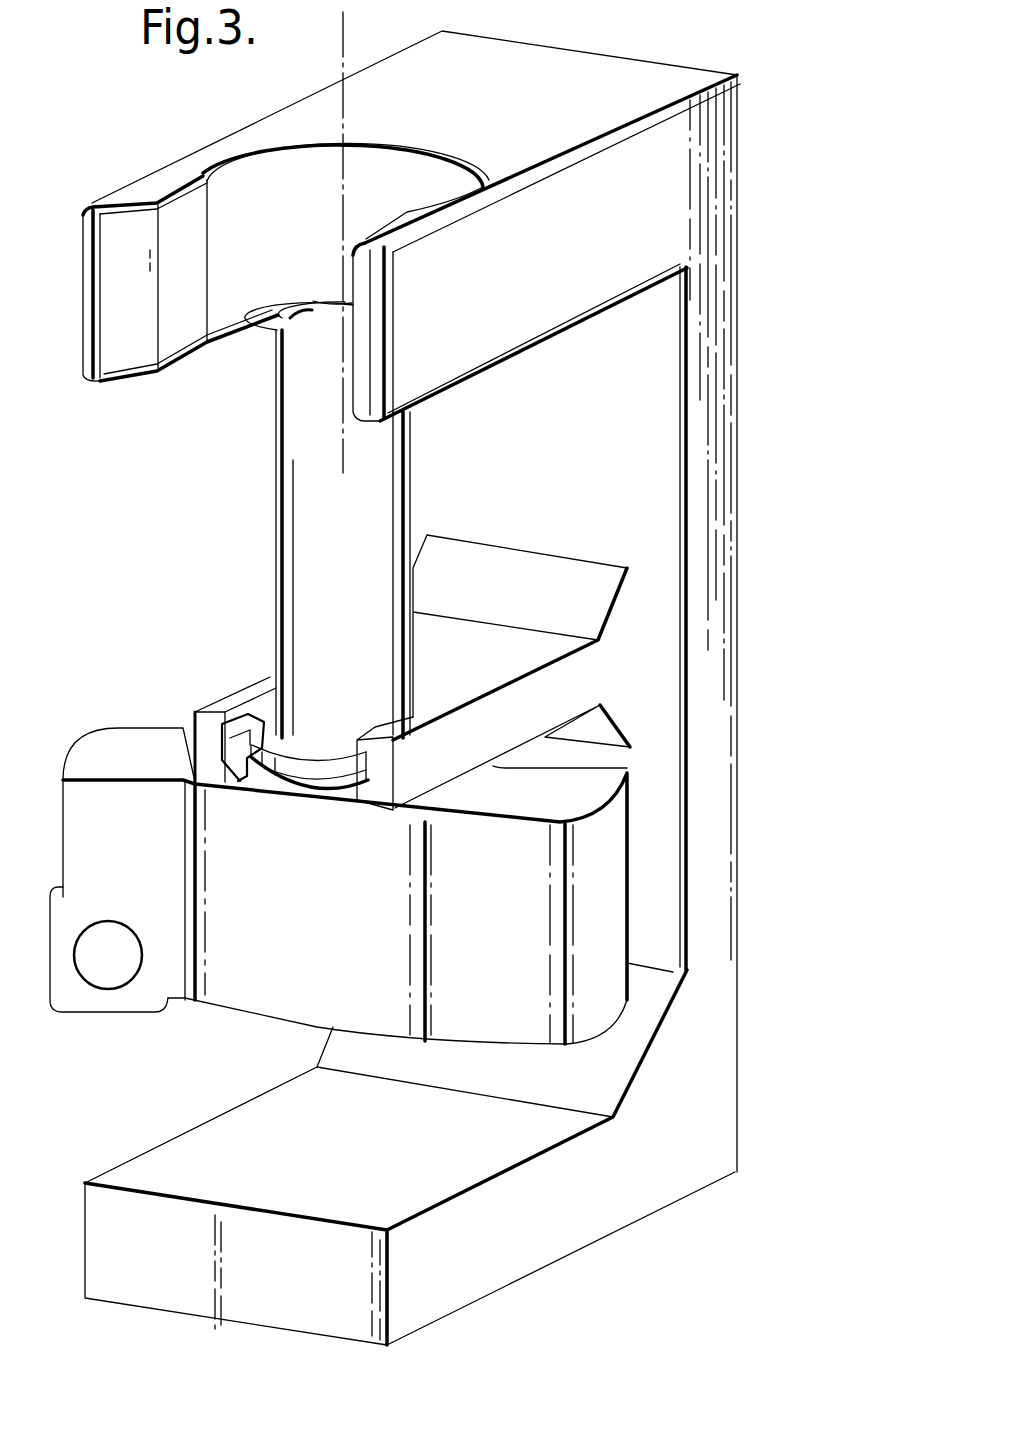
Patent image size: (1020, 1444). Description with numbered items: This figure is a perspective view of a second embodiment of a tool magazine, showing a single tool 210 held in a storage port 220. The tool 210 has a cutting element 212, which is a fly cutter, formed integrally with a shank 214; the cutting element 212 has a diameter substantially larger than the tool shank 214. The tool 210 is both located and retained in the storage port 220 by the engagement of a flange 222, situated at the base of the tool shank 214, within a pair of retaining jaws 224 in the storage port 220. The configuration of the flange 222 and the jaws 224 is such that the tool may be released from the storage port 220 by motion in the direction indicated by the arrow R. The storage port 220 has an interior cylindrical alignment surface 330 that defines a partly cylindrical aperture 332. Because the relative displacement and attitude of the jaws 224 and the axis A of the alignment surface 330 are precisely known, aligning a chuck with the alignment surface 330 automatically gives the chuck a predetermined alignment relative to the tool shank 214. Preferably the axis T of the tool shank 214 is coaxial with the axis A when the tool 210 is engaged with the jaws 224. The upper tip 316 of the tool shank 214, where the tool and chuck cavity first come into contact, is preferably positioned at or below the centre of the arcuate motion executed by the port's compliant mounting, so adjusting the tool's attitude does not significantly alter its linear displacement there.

The interior cylindrical alignment surface 330 is at (233, 172).
The partly cylindrical aperture 332 is at (416, 157).
The upper tip 316 is at (280, 317).
The shank 214 is at (303, 577).
The tool 210 is at (97, 692).
The retaining jaws 224 is at (232, 742).
The flange 222 is at (303, 757).
The cutting element 212 is at (63, 973).
The storage port 220 is at (575, 1195).
The axis of the alignment surface A is at (343, 38).
The axis of the tool shank T is at (343, 432).
The release direction arrow R is at (213, 835).